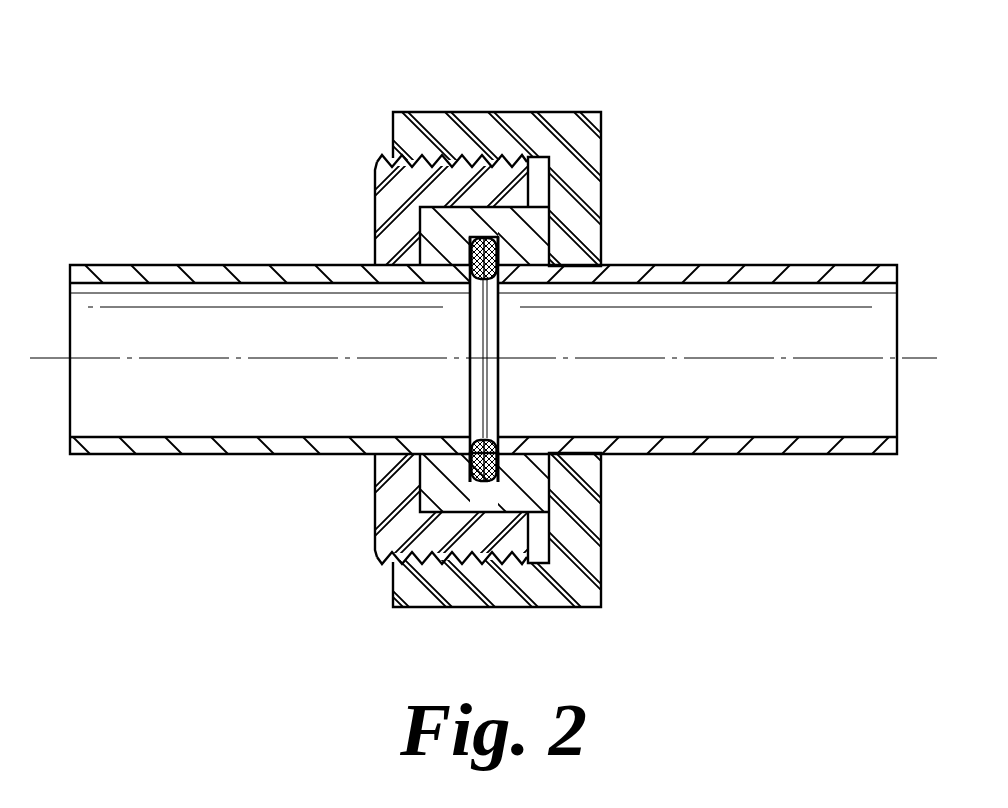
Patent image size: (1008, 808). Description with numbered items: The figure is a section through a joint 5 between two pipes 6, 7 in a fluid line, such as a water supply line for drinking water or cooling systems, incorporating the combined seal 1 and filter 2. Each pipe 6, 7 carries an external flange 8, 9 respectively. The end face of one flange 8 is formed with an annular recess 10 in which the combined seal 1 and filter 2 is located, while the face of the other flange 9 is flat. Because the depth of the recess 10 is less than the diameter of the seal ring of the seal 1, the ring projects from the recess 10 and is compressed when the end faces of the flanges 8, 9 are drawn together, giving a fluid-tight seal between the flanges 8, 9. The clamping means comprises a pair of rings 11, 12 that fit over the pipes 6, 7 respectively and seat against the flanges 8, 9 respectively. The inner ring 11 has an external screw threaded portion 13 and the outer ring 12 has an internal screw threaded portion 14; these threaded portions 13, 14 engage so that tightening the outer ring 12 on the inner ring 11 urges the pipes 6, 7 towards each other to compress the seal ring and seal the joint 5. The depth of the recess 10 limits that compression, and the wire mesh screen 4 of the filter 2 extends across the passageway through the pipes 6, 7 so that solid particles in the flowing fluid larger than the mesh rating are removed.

The seal 1 is at (500, 258).
The filter 2 is at (460, 415).
The wire mesh screen 4 is at (488, 345).
The joint 5 is at (647, 175).
The pipe 6 is at (179, 471).
The pipe 7 is at (764, 469).
The flange 8 is at (433, 484).
The flange 9 is at (532, 490).
The annular recess 10 is at (468, 262).
The ring 11 is at (390, 537).
The ring 12 is at (589, 548).
The external screw threaded portion 13 is at (380, 162).
The internal screw threaded portion 14 is at (513, 160).